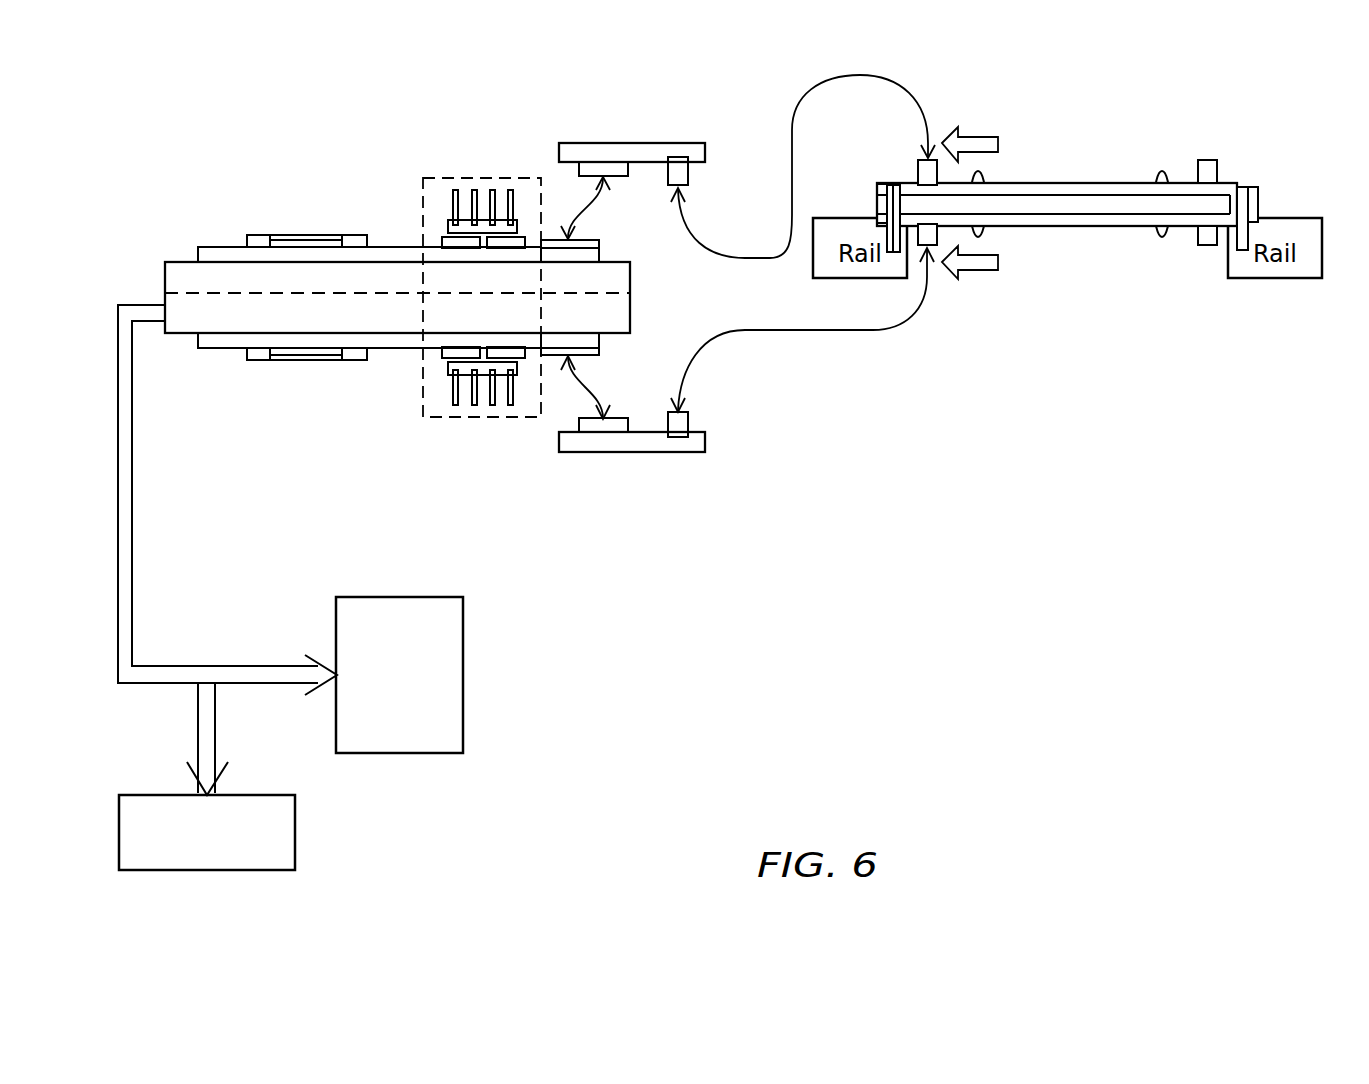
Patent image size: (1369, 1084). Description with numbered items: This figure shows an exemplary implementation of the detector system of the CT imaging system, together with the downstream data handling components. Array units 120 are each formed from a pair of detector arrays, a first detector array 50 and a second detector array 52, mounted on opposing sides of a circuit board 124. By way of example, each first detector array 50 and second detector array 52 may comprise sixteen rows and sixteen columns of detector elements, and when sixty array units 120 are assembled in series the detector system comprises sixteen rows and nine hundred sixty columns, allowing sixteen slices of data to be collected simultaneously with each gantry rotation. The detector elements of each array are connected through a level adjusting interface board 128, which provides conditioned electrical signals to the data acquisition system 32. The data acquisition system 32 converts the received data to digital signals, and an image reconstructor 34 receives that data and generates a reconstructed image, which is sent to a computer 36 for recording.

The data acquisition system 32 is at (390, 371).
The image reconstructor 34 is at (192, 870).
The computer 36 is at (398, 597).
The first detector array 50 is at (1233, 188).
The second detector array 52 is at (1183, 228).
The array unit 120 is at (1217, 154).
The circuit board 124 is at (1260, 202).
The level adjusting interface board 128 is at (621, 453).